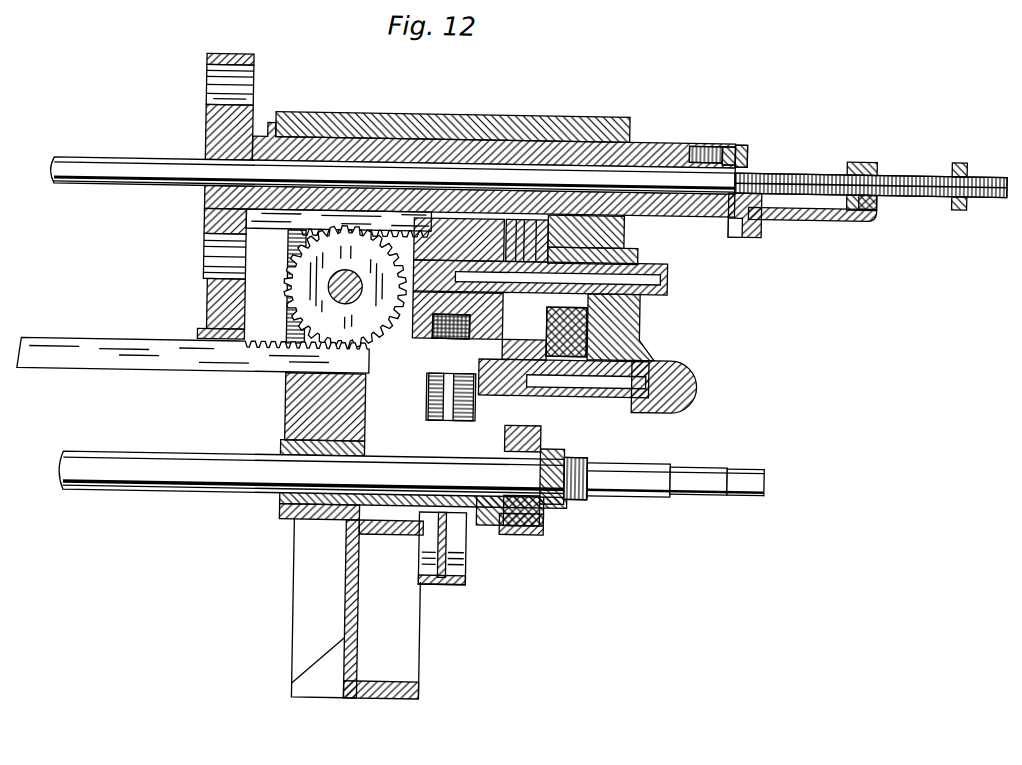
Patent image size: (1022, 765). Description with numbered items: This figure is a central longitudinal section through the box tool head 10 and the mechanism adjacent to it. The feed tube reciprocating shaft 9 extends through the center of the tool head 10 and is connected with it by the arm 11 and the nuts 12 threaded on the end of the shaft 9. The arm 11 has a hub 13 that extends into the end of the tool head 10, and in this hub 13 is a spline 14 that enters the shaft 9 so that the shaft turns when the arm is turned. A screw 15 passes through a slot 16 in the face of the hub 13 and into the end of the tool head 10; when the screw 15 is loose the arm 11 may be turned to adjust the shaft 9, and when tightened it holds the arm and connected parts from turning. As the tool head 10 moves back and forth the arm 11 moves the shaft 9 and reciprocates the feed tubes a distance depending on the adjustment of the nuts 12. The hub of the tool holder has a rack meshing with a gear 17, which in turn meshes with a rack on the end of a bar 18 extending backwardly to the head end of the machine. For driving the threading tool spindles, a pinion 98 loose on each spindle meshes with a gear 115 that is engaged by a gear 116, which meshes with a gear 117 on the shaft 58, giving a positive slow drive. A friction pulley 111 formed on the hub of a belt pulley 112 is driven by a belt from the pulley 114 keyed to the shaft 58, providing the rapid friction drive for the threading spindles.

The shaft 9 is at (118, 162).
The box tool head 10 is at (205, 144).
The pinion 98 is at (527, 210).
The hub 13 is at (699, 142).
The slot 16 is at (725, 140).
The screw 15 is at (742, 141).
The nuts 12 is at (851, 153).
The arm 11 is at (818, 213).
The spline 14 is at (727, 225).
The gear 115 is at (622, 228).
The gear 116 is at (640, 332).
The friction pulley 111 is at (452, 338).
The belt pulley 112 is at (450, 330).
The pulley 114 is at (428, 406).
The gear 17 is at (345, 287).
The bar 18 is at (78, 346).
The shaft 58 is at (112, 456).
The gear 117 is at (545, 428).